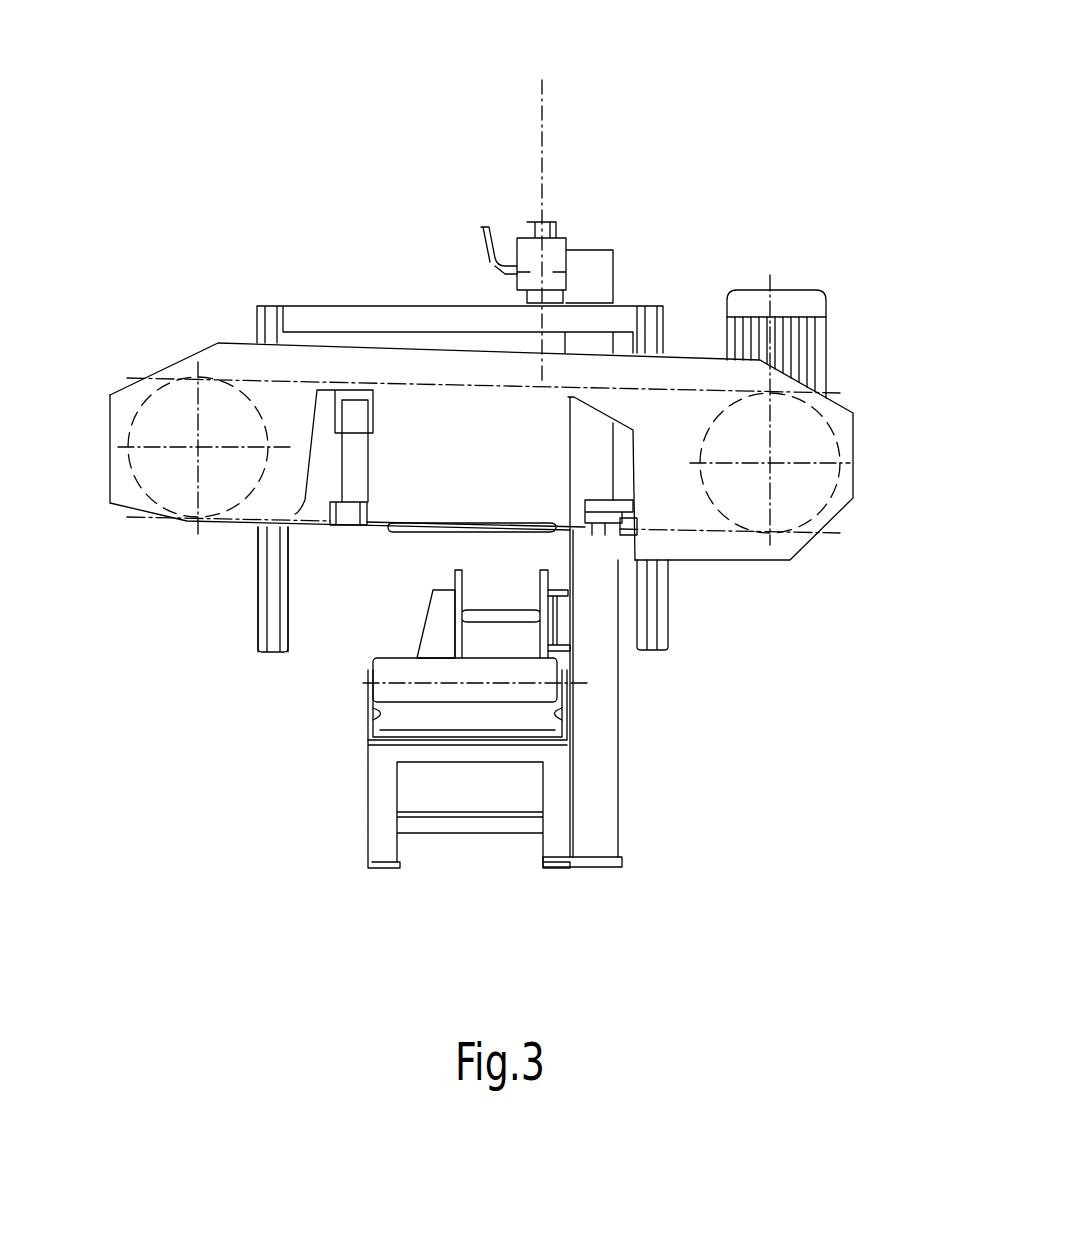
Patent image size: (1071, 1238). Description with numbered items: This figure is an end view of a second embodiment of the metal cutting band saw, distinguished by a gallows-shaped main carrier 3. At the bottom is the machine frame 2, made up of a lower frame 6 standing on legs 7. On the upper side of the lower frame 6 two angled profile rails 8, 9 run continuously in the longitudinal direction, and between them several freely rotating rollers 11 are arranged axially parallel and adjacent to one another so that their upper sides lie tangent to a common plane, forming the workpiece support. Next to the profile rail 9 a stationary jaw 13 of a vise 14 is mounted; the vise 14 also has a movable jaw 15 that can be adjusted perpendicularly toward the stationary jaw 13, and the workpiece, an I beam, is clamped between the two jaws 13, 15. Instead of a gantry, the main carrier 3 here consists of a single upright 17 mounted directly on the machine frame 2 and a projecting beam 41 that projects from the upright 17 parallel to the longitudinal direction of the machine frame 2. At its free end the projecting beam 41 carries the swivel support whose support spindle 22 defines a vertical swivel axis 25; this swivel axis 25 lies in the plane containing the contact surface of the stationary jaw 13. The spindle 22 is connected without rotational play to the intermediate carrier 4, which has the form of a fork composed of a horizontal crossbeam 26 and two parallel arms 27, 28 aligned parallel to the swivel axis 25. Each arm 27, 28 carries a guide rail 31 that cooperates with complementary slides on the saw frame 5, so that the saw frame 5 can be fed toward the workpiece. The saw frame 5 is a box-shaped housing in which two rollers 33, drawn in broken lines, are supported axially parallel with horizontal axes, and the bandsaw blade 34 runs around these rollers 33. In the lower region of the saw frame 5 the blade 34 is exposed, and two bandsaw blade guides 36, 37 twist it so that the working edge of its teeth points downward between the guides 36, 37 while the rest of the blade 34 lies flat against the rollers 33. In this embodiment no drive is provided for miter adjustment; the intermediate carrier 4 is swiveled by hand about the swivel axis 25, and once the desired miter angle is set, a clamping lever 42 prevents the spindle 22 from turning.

The machine frame 2 is at (355, 880).
The main carrier 3 is at (722, 158).
The intermediate carrier 4 is at (250, 250).
The saw frame 5 is at (866, 483).
The lower frame 6 is at (460, 846).
The legs 7 is at (556, 852).
The angled profile rail 8 is at (380, 717).
The angled profile rail 9 is at (580, 715).
The rollers 11 is at (400, 680).
The stationary jaw 13 is at (565, 595).
The vise 14 is at (434, 578).
The movable jaw 15 is at (440, 630).
The upright 17 is at (600, 707).
The support spindle 22 is at (572, 205).
The swivel axis 25 is at (544, 108).
The crossbeam 26 is at (340, 318).
The arm 27 is at (270, 605).
The arm 28 is at (805, 300).
The guide rail 31 is at (268, 560).
The rollers 33 is at (128, 428).
The bandsaw blade 34 is at (428, 512).
The bandsaw blade guide 36 is at (585, 512).
The bandsaw blade guide 37 is at (360, 468).
The projecting beam 41 is at (553, 270).
The clamping lever 42 is at (520, 268).